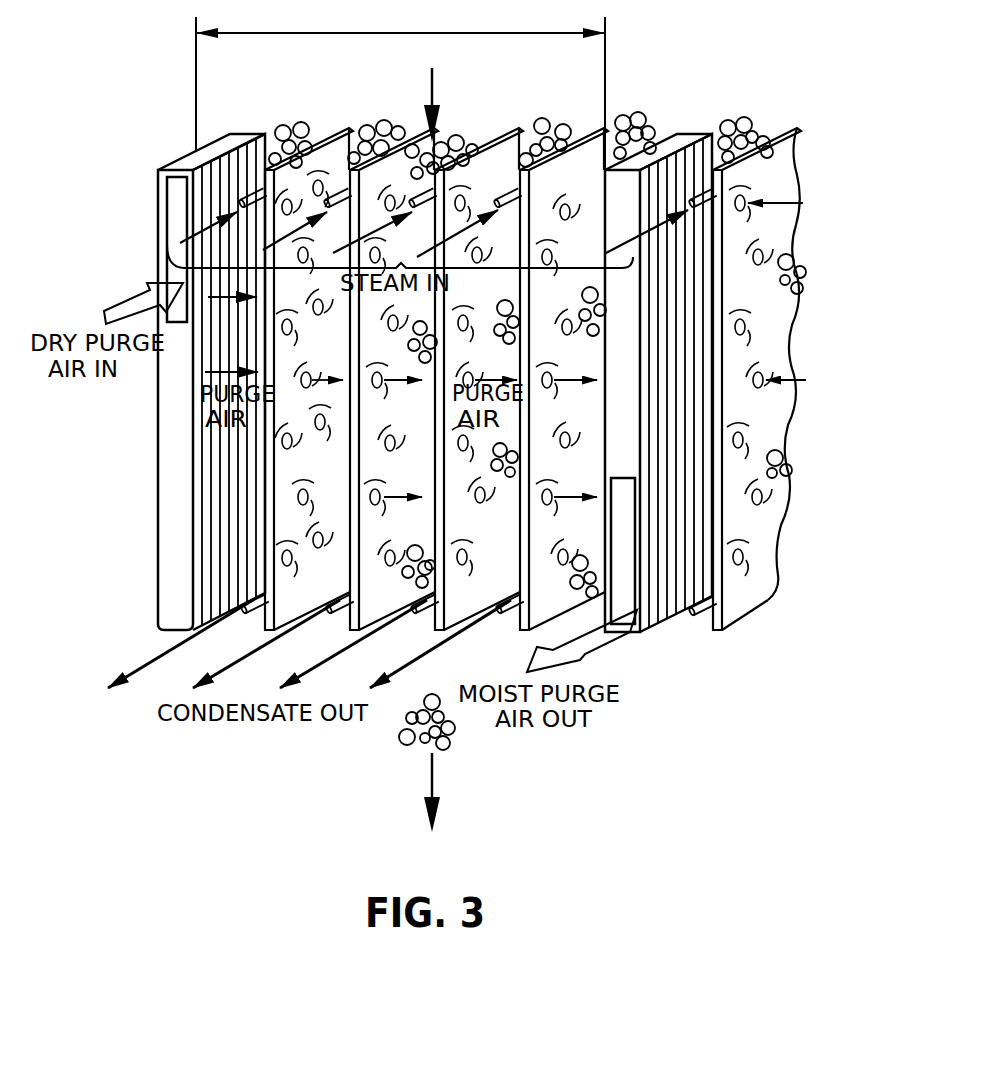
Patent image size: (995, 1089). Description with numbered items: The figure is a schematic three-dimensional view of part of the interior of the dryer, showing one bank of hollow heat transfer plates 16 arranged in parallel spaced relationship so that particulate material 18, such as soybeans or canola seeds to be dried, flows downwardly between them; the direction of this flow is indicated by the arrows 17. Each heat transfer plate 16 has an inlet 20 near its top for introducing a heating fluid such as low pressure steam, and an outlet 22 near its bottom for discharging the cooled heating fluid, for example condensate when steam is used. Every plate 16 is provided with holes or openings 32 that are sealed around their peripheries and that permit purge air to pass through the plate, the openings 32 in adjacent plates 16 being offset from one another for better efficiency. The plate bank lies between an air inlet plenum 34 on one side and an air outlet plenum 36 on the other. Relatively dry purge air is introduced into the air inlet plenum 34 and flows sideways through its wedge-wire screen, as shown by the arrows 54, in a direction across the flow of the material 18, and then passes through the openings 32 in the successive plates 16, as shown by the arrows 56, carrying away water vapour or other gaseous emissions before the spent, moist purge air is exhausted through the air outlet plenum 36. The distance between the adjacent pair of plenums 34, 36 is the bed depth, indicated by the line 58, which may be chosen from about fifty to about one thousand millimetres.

The heat transfer plate 16 is at (333, 134).
The arrows indicating direction of flow of material 17 is at (432, 88).
The particulate material 18 is at (290, 125).
The inlet 20 is at (260, 188).
The outlet 22 is at (262, 596).
The holes or openings 32 is at (568, 202).
The air inlet plenum 34 is at (160, 468).
The air outlet plenum 36 is at (673, 133).
The arrows indicating purge air flow from plenums 54 is at (206, 374).
The arrows indicating purge air flow through openings 56 is at (374, 437).
The line indicating bed depth 58 is at (410, 33).